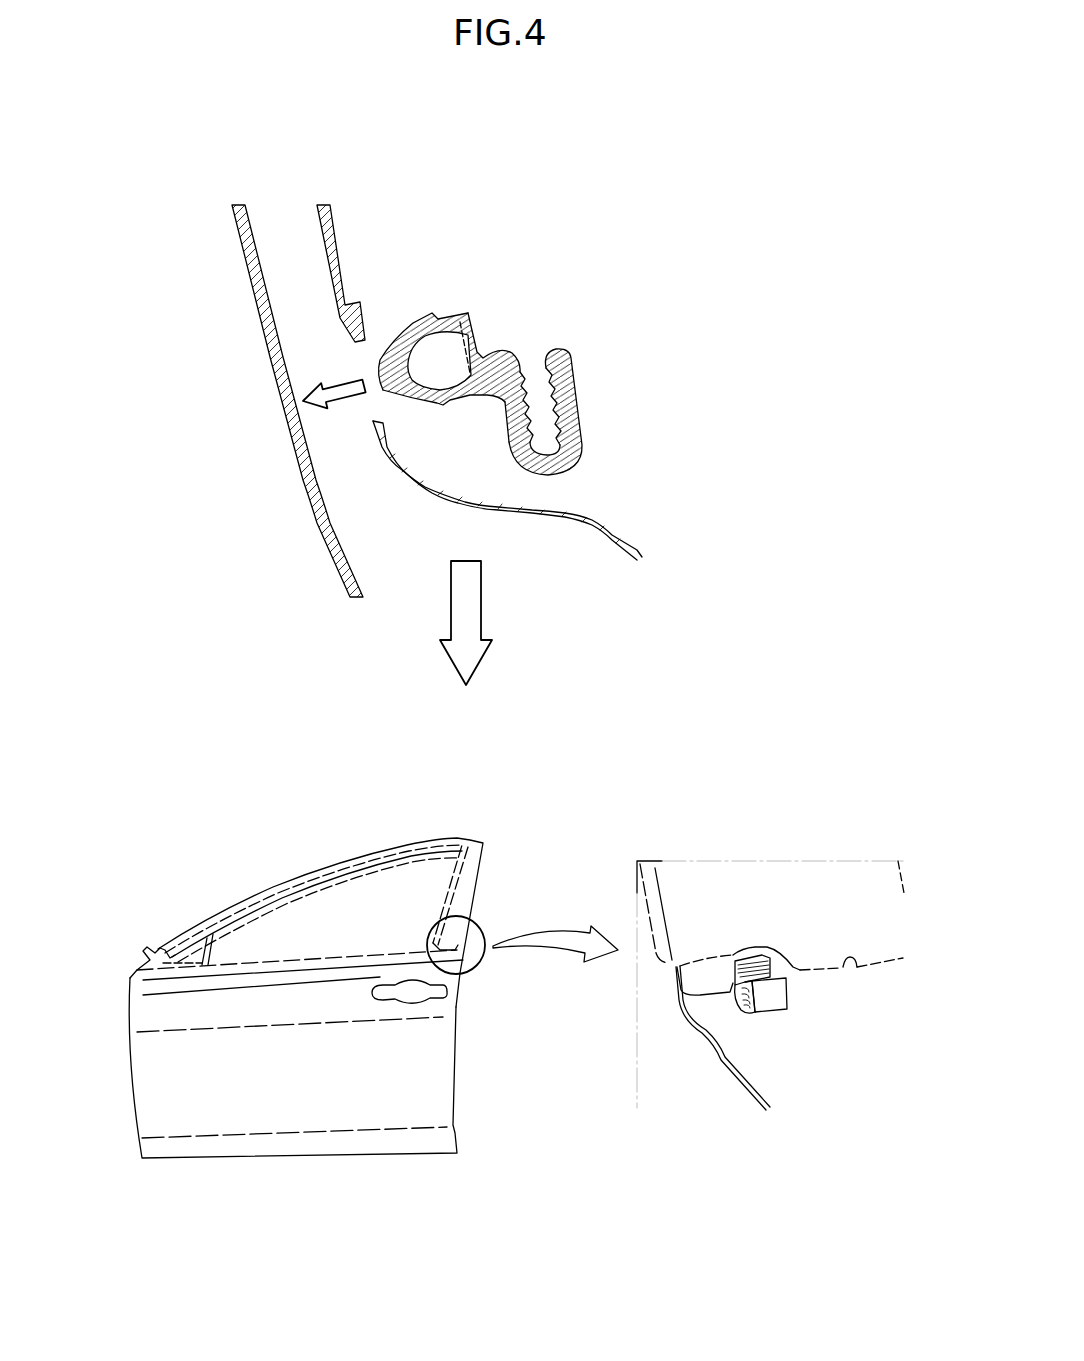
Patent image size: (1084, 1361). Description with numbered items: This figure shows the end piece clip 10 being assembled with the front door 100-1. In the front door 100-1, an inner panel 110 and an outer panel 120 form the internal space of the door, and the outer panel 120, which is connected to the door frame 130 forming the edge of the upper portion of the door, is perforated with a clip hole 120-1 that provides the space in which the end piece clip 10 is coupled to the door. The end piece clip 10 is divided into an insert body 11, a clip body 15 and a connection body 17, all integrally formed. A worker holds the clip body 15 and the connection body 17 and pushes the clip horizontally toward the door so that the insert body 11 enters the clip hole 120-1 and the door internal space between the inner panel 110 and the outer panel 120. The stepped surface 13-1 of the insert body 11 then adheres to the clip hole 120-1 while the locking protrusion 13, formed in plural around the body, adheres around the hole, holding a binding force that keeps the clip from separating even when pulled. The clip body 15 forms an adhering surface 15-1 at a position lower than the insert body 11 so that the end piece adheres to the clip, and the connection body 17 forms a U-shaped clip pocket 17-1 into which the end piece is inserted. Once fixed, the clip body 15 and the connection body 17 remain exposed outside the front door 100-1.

The end piece clip 10 is at (606, 670).
The insert body 11 is at (398, 342).
The locking protrusion 13 is at (447, 408).
The stepped surface 13-1 is at (447, 318).
The clip body 15 is at (487, 380).
The adhering surface 15-1 is at (483, 362).
The connection body 17 is at (583, 438).
The clip pocket 17-1 is at (548, 404).
The front door 100-1 is at (176, 903).
The inner panel 110 is at (315, 508).
The outer panel 120 is at (615, 528).
The clip hole 120-1 is at (372, 407).
The door frame 130 is at (332, 230).